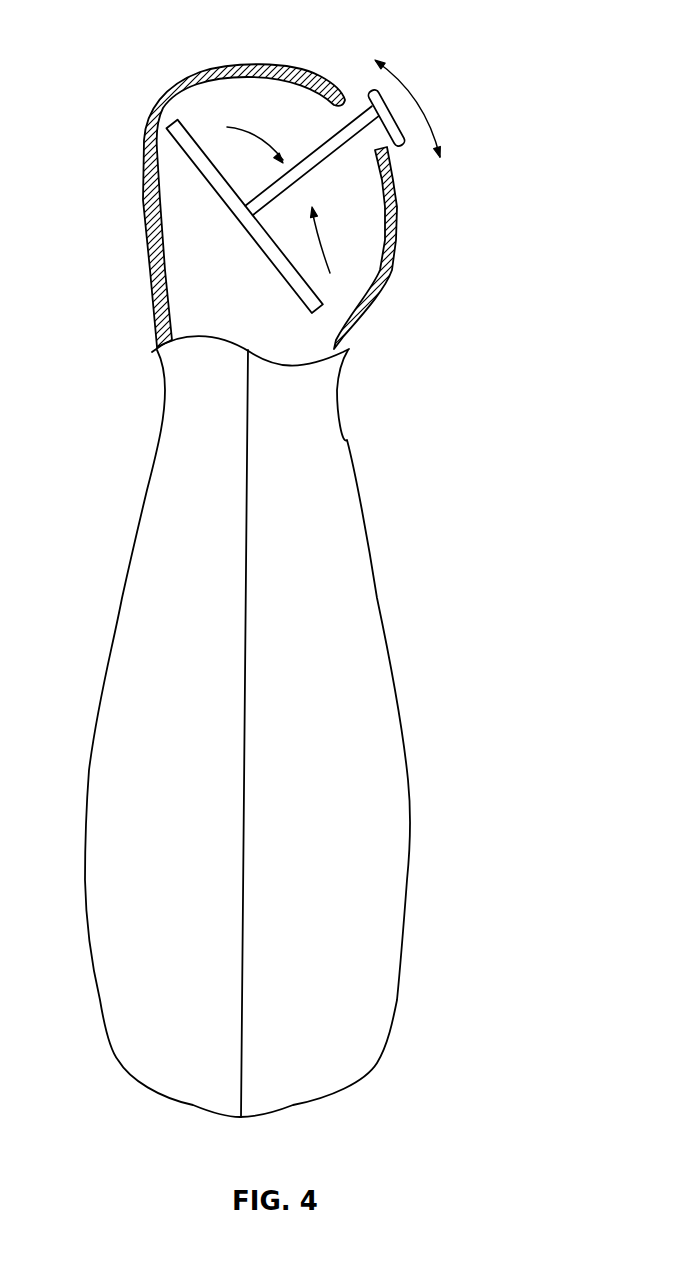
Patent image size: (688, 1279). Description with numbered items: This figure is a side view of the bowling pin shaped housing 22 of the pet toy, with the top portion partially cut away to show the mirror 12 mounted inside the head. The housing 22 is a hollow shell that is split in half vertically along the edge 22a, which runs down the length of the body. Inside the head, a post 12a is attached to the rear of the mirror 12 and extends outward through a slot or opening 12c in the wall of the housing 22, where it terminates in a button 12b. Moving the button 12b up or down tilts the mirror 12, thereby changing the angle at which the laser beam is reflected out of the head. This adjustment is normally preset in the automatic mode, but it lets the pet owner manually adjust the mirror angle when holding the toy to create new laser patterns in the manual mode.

The housing 22 is at (155, 100).
The edge 22a is at (247, 763).
The mirror 12 is at (213, 198).
The post 12a is at (357, 132).
The button 12b is at (395, 113).
The slot or opening 12c is at (362, 110).